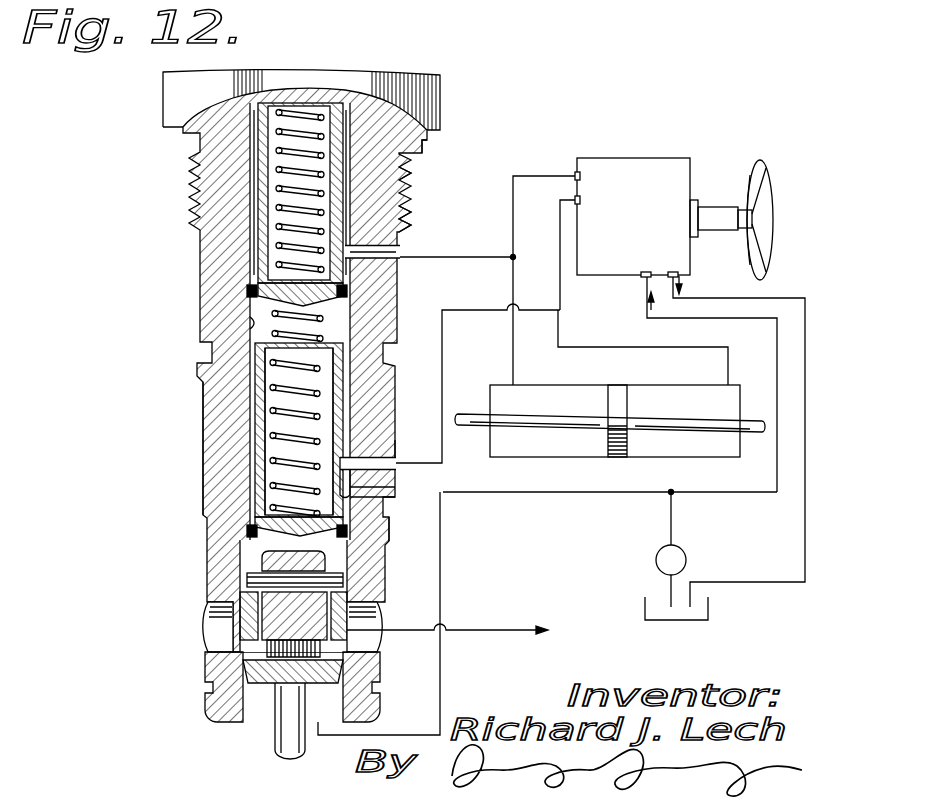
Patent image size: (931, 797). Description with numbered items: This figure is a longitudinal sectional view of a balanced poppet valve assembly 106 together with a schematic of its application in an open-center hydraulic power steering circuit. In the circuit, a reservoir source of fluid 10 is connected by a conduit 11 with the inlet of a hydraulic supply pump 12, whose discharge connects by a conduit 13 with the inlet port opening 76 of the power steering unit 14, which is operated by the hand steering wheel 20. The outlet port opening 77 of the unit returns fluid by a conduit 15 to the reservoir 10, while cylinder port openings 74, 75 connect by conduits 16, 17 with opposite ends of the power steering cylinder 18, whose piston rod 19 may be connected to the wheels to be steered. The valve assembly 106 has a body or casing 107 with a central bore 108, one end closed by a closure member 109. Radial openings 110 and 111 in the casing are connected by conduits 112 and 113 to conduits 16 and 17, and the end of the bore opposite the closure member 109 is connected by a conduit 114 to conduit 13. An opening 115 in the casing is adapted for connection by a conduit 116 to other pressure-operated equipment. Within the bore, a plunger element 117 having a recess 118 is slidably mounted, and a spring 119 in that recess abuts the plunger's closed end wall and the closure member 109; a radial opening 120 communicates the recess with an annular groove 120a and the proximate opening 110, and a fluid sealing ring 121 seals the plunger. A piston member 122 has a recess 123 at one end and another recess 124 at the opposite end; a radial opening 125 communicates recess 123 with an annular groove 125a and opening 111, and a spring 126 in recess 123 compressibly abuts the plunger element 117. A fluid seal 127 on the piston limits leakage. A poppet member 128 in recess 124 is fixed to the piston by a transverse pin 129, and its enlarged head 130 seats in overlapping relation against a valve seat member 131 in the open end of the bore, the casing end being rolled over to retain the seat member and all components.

The reservoir source of fluid 10 is at (712, 606).
The conduit 11 is at (666, 584).
The hydraulic supply pump 12 is at (688, 556).
The conduit 13 is at (644, 300).
The power steering unit 14 is at (661, 153).
The conduit 15 is at (742, 298).
The conduit 16 is at (532, 175).
The conduit 17 is at (576, 200).
The power steering cylinder 18 is at (654, 389).
The piston rod 19 is at (570, 418).
The steering wheel 20 is at (772, 172).
The cylinder port opening 74 is at (582, 172).
The cylinder port opening 75 is at (584, 200).
The inlet port opening 76 is at (646, 270).
The outlet port opening 77 is at (677, 268).
The balanced poppet valve assembly 106 is at (186, 294).
The body or casing 107 is at (212, 402).
The central bore 108 is at (250, 322).
The closure member 109 is at (383, 72).
The radial opening 110 is at (400, 260).
The radial opening 111 is at (391, 458).
The conduit 112 is at (483, 243).
The conduit 113 is at (470, 298).
The conduit 114 is at (444, 557).
The opening 115 is at (213, 614).
The conduit 116 is at (500, 612).
The plunger element 117 is at (414, 156).
The recess 118 is at (262, 168).
The spring 119 is at (262, 200).
The radial opening 120 is at (405, 232).
The annular groove 120a is at (405, 198).
The fluid sealing ring 121 is at (250, 292).
The piston member 122 is at (272, 412).
The recess 123 is at (268, 452).
The recess 124 is at (258, 556).
The radial opening 125 is at (352, 497).
The annular groove 125a is at (396, 430).
The spring 126 is at (290, 436).
The fluid seal 127 is at (250, 533).
The poppet member 128 is at (258, 648).
The pin 129 is at (290, 578).
The enlarged head 130 is at (268, 700).
The valve seat member 131 is at (250, 680).